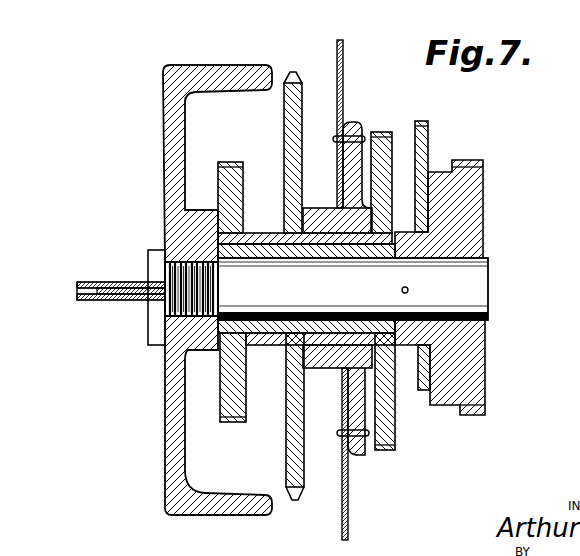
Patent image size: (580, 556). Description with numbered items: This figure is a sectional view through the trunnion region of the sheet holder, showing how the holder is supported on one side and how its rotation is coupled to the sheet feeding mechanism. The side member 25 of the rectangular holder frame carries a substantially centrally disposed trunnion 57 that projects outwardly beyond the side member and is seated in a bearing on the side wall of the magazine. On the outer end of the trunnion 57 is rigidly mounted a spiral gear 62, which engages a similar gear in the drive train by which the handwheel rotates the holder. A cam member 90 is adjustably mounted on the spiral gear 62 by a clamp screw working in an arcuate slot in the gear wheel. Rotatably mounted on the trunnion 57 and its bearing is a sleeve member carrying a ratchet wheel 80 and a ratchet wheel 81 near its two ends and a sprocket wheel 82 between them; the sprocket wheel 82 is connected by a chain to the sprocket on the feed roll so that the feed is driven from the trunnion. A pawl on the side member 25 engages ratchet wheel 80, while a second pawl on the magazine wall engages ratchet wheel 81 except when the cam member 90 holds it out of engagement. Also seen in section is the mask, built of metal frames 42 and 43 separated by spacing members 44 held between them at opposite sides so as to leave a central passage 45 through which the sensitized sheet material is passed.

The side member 25 is at (170, 150).
The metal frame 42 is at (100, 300).
The metal frame 43 is at (103, 282).
The spacing member 44 is at (138, 300).
The central passage 45 is at (95, 291).
The trunnion 57 is at (492, 262).
The spiral gear 62 is at (478, 166).
The ratchet wheel 80 is at (238, 160).
The ratchet wheel 81 is at (388, 130).
The sprocket wheel 82 is at (296, 80).
The cam member 90 is at (430, 148).